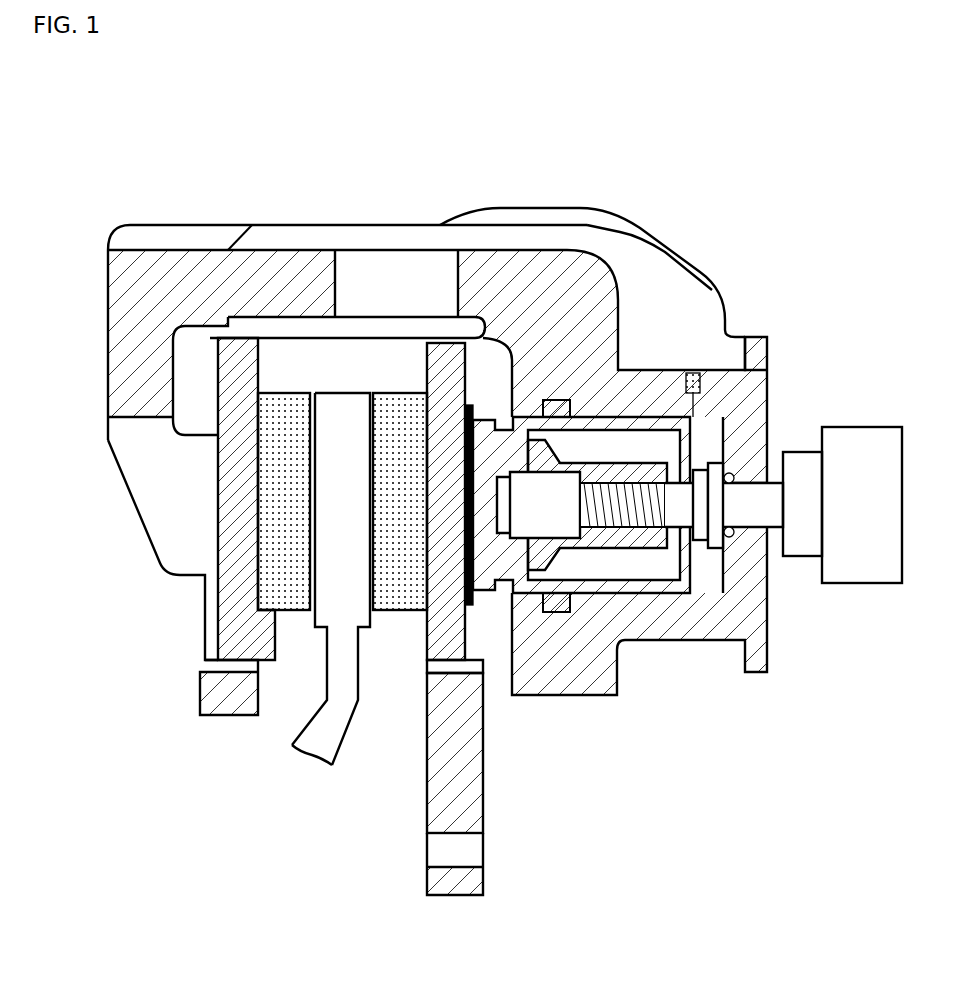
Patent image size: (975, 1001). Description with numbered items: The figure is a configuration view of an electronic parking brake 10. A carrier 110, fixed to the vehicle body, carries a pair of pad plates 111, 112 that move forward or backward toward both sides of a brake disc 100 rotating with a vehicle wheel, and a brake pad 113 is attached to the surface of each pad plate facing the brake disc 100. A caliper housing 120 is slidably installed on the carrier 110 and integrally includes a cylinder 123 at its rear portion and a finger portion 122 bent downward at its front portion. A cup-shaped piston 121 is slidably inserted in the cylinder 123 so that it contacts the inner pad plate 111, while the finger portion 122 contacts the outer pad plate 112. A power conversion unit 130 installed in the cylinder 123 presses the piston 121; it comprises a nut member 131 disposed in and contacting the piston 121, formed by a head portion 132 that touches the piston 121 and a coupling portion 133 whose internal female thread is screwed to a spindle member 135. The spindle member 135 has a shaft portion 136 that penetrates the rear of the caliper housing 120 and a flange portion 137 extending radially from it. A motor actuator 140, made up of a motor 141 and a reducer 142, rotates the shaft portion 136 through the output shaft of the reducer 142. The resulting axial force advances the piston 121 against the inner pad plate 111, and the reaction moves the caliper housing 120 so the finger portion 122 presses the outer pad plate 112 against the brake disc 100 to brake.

The electronic parking brake 10 is at (508, 102).
The brake disc 100 is at (335, 740).
The carrier 110 is at (440, 808).
The inner pad plate 111 is at (437, 640).
The outer pad plate 112 is at (232, 604).
The brake pad 113 is at (295, 614).
The caliper housing 120 is at (323, 236).
The piston 121 is at (487, 607).
The finger portion 122 is at (126, 480).
The cylinder 123 is at (755, 343).
The power conversion unit 130 is at (627, 426).
The nut member 131 is at (625, 808).
The head portion 132 is at (540, 592).
The coupling portion 133 is at (612, 548).
The spindle member 135 is at (795, 770).
The shaft portion 136 is at (735, 522).
The flange portion 137 is at (700, 522).
The motor actuator 140 is at (855, 358).
The motor 141 is at (850, 428).
The reducer 142 is at (805, 452).